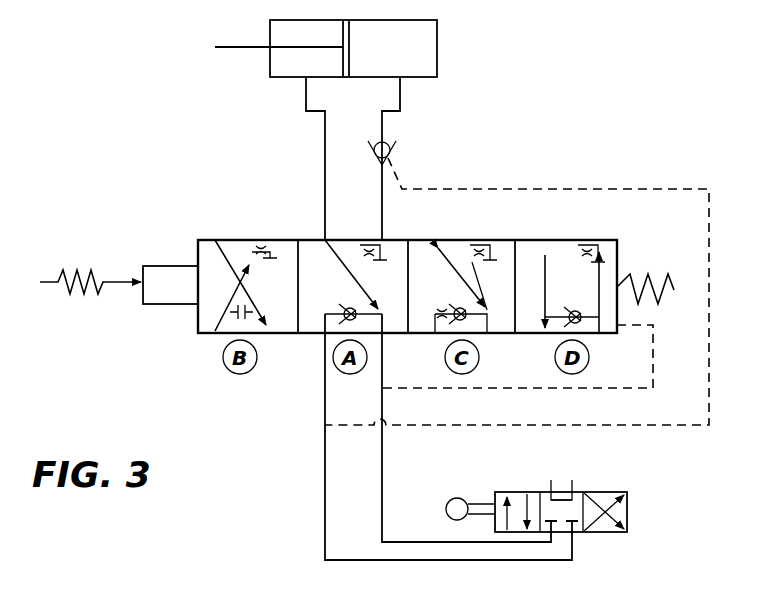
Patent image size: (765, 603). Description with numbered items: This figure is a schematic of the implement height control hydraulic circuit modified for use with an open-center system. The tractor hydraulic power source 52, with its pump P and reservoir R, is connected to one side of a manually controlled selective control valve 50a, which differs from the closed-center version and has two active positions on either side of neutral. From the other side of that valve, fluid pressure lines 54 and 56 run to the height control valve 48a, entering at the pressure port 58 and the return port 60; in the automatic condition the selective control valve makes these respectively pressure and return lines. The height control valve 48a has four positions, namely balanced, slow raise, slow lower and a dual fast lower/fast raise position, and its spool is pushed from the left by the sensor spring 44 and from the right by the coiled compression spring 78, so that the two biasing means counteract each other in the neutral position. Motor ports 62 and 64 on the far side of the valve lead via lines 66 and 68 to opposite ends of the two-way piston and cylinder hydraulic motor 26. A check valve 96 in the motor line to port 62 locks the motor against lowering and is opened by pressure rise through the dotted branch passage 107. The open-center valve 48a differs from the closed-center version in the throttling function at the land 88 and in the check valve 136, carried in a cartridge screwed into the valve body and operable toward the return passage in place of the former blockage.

The hydraulic motor 26 is at (440, 25).
The motor line 68 is at (320, 114).
The motor line 66 is at (392, 113).
The check valve 96 is at (392, 155).
The branch passage 107 is at (558, 188).
The height control valve 48a is at (219, 236).
The sensor spring 44 is at (92, 272).
The motor port 64 is at (325, 240).
The motor port 62 is at (382, 240).
The coiled compression spring 78 is at (640, 278).
The pressure port 58 is at (325, 335).
The return port 60 is at (383, 335).
The land 88 is at (442, 334).
The check valve 136 is at (348, 322).
The fluid pressure line 54 is at (324, 497).
The fluid pressure line 56 is at (381, 497).
The hydraulic power source 52 is at (528, 462).
The selective control valve 50a is at (627, 481).